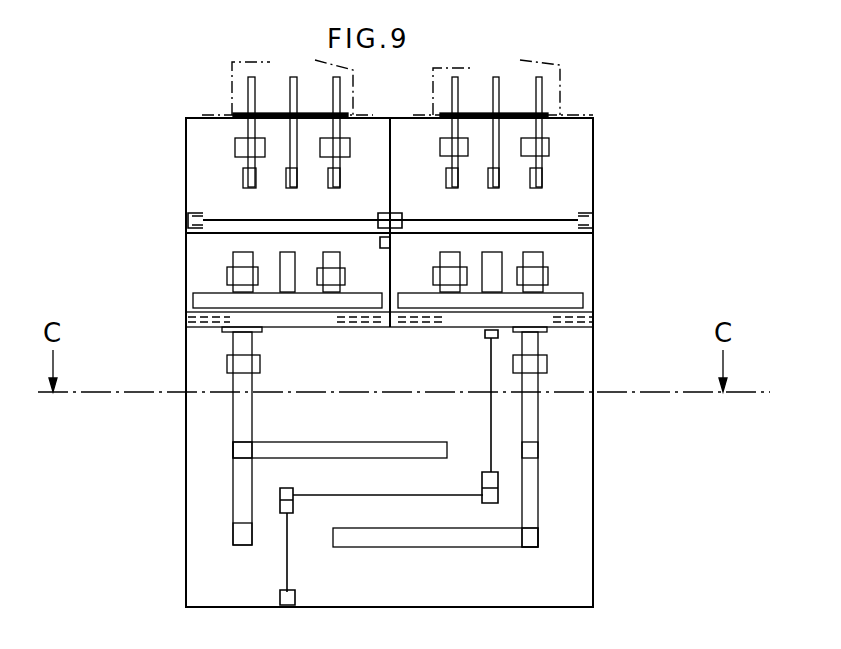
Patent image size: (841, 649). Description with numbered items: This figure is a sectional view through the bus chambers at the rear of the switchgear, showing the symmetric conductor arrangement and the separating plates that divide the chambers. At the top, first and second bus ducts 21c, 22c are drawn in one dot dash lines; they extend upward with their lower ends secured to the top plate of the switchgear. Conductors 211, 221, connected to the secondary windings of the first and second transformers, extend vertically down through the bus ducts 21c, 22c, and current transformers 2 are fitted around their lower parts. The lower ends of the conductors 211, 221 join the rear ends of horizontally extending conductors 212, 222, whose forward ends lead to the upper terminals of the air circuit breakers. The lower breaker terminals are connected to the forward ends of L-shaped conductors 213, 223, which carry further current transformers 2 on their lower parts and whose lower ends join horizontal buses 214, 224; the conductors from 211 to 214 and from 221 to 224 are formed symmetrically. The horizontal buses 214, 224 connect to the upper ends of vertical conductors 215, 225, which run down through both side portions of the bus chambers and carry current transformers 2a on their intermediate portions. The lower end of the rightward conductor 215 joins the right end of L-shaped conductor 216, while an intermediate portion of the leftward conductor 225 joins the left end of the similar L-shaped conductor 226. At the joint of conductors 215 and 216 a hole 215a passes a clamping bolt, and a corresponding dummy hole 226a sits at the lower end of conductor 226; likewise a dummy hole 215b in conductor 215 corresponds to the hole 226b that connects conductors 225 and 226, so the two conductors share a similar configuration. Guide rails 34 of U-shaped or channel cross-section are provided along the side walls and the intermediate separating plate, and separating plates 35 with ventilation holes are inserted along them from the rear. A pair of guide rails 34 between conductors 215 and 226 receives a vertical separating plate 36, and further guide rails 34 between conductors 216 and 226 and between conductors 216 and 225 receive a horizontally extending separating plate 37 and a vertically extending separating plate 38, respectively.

The current transformer 2 is at (235, 147).
The current transformer 2a is at (227, 365).
The first bus duct 21c is at (560, 65).
The second bus duct 22c is at (353, 70).
The guide rail 34 is at (195, 213).
The separating plate 35 is at (240, 220).
The vertical separating plate 36 is at (491, 400).
The horizontally extending separating plate 37 is at (345, 495).
The vertically extending separating plate 38 is at (288, 560).
The conductor 211 is at (542, 95).
The horizontally extending conductor 212 is at (525, 185).
The L-shaped conductor 213 is at (543, 260).
The horizontal bus 214 is at (583, 300).
The conductor 215 is at (538, 418).
The hole 215a is at (538, 535).
The dummy hole 215b is at (538, 450).
The L-shaped conductor 216 is at (420, 548).
The conductor 221 is at (248, 100).
The horizontally extending conductor 222 is at (328, 180).
The L-shaped conductor 223 is at (233, 262).
The horizontal bus 224 is at (193, 300).
The conductor 225 is at (233, 408).
The L-shaped conductor 226 is at (305, 442).
The dummy hole 226a is at (233, 535).
The hole 226b is at (233, 452).